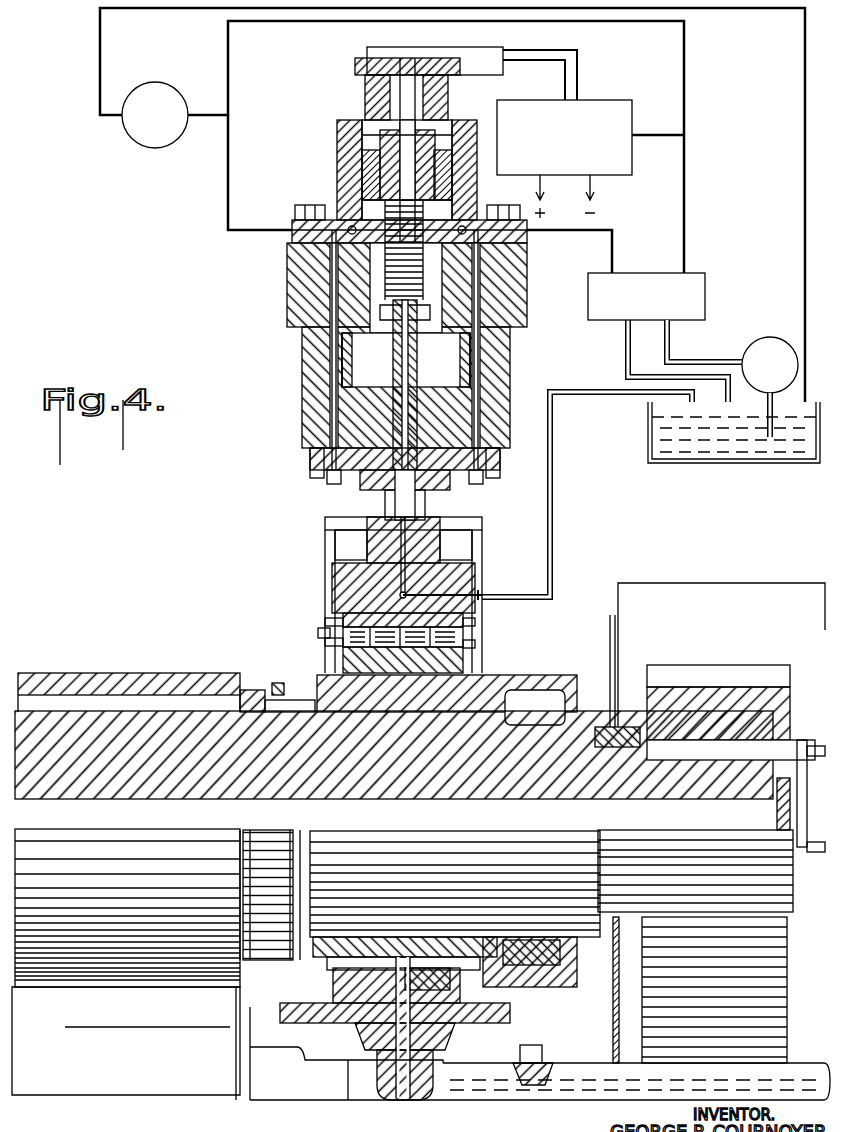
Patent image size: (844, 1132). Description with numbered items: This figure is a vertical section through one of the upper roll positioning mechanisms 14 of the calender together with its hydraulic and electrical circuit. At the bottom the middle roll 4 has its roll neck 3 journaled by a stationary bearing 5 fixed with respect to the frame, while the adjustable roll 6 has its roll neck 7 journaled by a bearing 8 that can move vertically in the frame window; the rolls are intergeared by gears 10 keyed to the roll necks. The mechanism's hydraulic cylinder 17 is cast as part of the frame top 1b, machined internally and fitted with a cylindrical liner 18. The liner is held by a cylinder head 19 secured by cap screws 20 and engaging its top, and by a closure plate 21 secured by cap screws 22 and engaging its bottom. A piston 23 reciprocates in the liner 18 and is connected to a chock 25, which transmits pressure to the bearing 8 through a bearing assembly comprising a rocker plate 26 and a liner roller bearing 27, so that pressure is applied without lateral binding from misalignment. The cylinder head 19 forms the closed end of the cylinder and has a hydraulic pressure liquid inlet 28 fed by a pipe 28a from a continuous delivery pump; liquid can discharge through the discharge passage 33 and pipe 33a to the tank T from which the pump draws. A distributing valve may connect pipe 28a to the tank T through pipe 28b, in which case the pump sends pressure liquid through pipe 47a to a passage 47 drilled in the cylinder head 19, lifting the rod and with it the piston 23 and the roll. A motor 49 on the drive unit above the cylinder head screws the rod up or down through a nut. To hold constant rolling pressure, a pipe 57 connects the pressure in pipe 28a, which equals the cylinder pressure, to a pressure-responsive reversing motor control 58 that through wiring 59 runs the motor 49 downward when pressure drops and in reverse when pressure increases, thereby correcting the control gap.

The frame top 1b is at (302, 395).
The roll neck 3 is at (322, 1088).
The middle roll 4 is at (165, 1080).
The stationary bearing 5 is at (415, 1060).
The adjustable roll 6 is at (55, 857).
The roll neck 7 is at (485, 842).
The bearing 8 is at (412, 712).
The gear 10 is at (775, 703).
The roll positioning mechanism 14 is at (276, 342).
The hydraulic cylinder 17 is at (460, 370).
The cylindrical liner 18 is at (350, 362).
The cylinder head 19 is at (340, 268).
The cap screw 20 is at (305, 205).
The closure plate 21 is at (335, 482).
The cap screw 22 is at (325, 472).
The piston 23 is at (475, 436).
The chock 25 is at (335, 590).
The rocker plate 26 is at (450, 664).
The liner roller bearing 27 is at (465, 636).
The hydraulic pressure liquid inlet 28 is at (292, 240).
The pipe 28a is at (684, 80).
The pipe 28b is at (210, 113).
The discharge passage 33 is at (410, 592).
The pipe 33a is at (553, 500).
The passage 47 is at (463, 287).
The pipe 47a is at (610, 230).
The motor 49 is at (480, 52).
The pipe 57 is at (657, 136).
The pressure-responsive reversing motor control 58 is at (602, 100).
The wiring 59 is at (577, 52).
The tank T is at (716, 450).